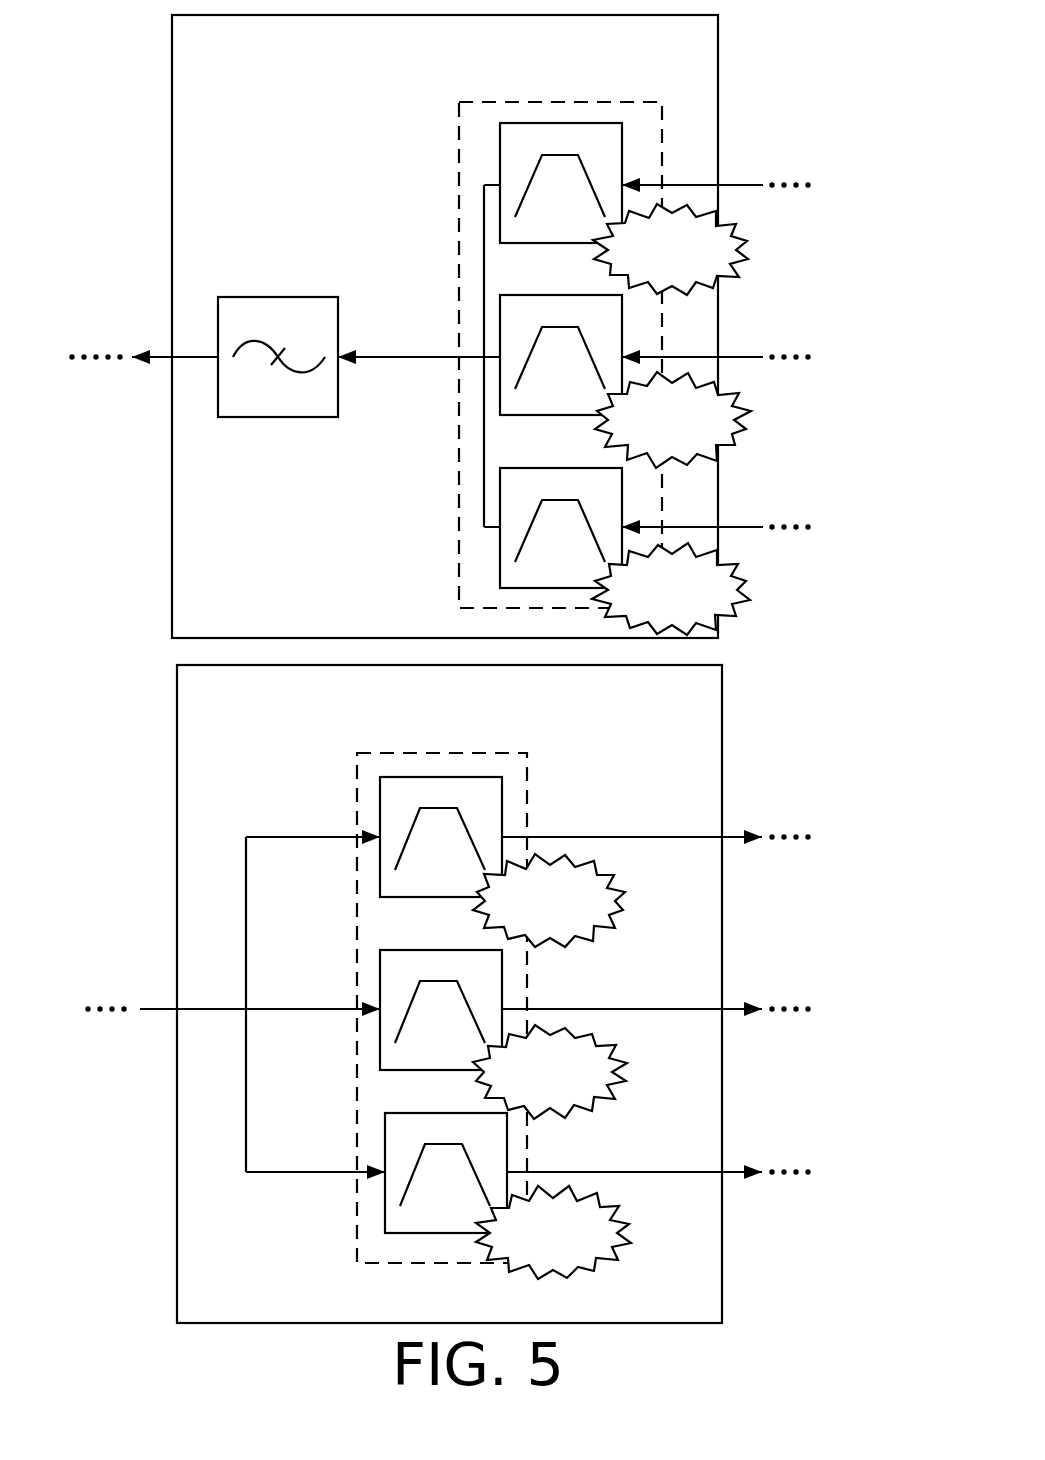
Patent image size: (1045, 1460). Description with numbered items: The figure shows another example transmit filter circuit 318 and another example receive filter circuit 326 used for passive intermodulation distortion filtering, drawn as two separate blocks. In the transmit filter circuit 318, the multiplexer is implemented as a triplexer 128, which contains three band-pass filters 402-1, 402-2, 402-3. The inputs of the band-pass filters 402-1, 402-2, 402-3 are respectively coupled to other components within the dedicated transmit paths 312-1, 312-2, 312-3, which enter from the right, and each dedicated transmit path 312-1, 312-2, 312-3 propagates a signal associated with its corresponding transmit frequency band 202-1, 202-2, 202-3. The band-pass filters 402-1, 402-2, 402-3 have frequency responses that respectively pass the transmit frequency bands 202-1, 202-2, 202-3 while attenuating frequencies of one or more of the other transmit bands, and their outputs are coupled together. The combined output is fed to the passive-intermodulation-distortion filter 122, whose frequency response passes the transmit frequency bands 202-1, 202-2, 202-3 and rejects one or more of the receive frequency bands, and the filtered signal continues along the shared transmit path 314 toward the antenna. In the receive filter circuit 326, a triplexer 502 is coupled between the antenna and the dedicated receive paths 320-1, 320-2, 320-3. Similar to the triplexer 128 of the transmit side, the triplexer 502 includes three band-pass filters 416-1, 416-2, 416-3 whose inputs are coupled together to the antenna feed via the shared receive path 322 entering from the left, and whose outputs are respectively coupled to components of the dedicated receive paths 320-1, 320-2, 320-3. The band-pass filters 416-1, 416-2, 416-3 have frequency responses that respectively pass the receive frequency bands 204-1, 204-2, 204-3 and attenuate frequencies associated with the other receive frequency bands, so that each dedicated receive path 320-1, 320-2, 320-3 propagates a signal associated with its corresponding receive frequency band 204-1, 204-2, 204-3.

The transmit filter circuit 318 is at (423, 79).
The triplexer 128 is at (548, 102).
The band-pass filter 402-1 is at (500, 163).
The band-pass filter 402-2 is at (500, 330).
The band-pass filter 402-3 is at (500, 553).
The transmit frequency band 202-1 is at (640, 274).
The transmit frequency band 202-2 is at (640, 444).
The transmit frequency band 202-3 is at (640, 614).
The dedicated transmit path 312-1 is at (732, 162).
The dedicated transmit path 312-2 is at (732, 337).
The dedicated transmit path 312-3 is at (732, 509).
The passive-intermodulation-distortion filter 122 is at (278, 297).
The shared transmit path 314 is at (191, 333).
The receive filter circuit 326 is at (426, 727).
The triplexer 502 is at (530, 812).
The band-pass filter 416-1 is at (380, 800).
The band-pass filter 416-2 is at (380, 1062).
The band-pass filter 416-3 is at (385, 1222).
The receive frequency band 204-1 is at (518, 927).
The receive frequency band 204-2 is at (518, 1099).
The receive frequency band 204-3 is at (521, 1261).
The dedicated receive path 320-1 is at (637, 858).
The dedicated receive path 320-2 is at (637, 1026).
The dedicated receive path 320-3 is at (644, 1189).
The shared receive path 322 is at (200, 996).